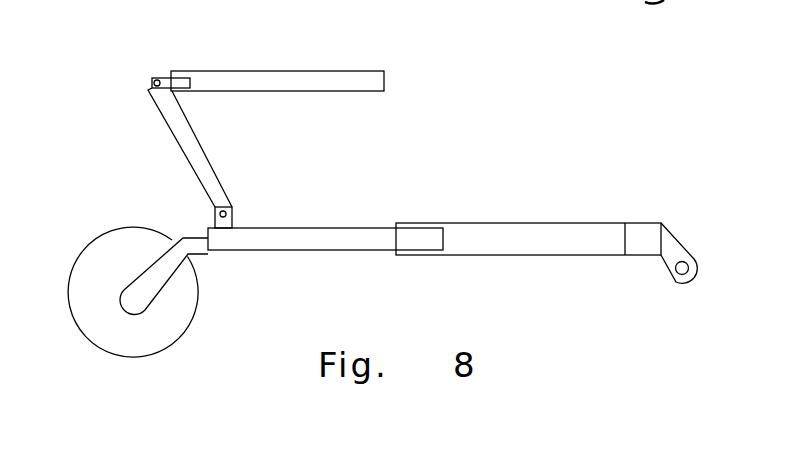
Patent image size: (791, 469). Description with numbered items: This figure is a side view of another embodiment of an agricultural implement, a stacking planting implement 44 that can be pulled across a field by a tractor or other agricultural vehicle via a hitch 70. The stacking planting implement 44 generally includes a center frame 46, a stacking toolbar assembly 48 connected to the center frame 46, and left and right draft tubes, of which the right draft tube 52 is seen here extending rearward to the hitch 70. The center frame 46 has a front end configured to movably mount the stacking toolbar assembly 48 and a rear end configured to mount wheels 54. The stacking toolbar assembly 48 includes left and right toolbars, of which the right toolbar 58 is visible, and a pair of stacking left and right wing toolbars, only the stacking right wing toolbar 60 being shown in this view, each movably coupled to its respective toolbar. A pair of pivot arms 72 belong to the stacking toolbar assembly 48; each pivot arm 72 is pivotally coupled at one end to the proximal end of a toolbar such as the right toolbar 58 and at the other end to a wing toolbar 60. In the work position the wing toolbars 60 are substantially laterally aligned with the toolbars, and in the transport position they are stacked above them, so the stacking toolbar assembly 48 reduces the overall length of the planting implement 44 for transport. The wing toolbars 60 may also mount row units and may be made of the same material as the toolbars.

The stacking planting implement 44 is at (435, 88).
The center frame 46 is at (196, 242).
The stacking toolbar assembly 48 is at (162, 63).
The right draft tube 52 is at (560, 245).
The wheels 54 is at (107, 340).
The right toolbar 58 is at (314, 243).
The stacking right wing toolbar 60 is at (267, 66).
The hitch 70 is at (678, 253).
The pivot arm 72 is at (176, 155).